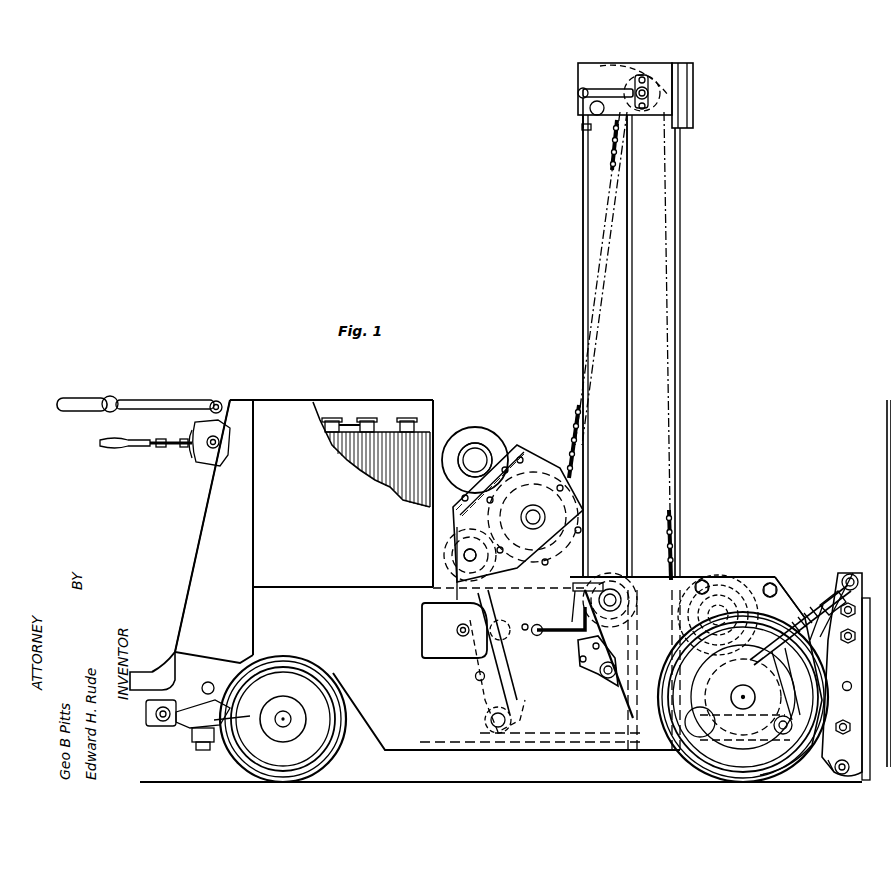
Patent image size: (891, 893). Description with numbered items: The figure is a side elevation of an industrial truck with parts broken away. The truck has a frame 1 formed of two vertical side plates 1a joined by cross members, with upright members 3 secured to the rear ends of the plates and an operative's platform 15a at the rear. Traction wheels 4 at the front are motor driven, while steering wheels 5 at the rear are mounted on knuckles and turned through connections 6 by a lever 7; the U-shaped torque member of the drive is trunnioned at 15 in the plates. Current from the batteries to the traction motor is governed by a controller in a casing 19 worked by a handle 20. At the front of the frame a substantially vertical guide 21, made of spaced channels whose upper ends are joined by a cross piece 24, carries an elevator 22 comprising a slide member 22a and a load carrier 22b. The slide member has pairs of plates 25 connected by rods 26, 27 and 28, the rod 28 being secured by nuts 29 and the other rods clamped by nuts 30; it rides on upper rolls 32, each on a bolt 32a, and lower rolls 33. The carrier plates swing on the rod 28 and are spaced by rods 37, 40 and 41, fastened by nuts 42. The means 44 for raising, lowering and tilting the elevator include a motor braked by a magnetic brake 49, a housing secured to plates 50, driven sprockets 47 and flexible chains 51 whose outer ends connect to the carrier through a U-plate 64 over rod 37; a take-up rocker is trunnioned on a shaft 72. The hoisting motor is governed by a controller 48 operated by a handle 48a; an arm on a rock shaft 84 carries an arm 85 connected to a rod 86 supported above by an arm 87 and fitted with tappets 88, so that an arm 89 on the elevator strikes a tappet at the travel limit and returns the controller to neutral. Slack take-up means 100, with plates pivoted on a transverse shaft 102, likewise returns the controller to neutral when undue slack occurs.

The frame 1 is at (393, 693).
The side plates 1a is at (344, 598).
The upright members 3 is at (196, 537).
The traction wheels 4 is at (686, 768).
The steering wheels 5 is at (334, 750).
The connections 6 is at (216, 748).
The lever 7 is at (84, 398).
The trunnions 15 is at (604, 680).
The operative's platform 15a is at (190, 693).
The controller casing 19 is at (192, 466).
The handle 20 is at (136, 452).
The guide 21 is at (631, 346).
The elevator 22 is at (776, 556).
The slide member 22a is at (654, 670).
The load carrier 22b is at (841, 674).
The cross piece 24 is at (694, 91).
The plates 25 is at (376, 478).
The rod 26 is at (701, 580).
The rod 27 is at (771, 582).
The rod 28 is at (838, 773).
The nuts 29 is at (850, 776).
The nuts 30 is at (782, 582).
The upper rolls 32 is at (642, 346).
The bolt 32a is at (621, 601).
The lower rolls 33 is at (796, 784).
The rod 37 is at (852, 574).
The rod 40 is at (850, 727).
The rod 41 is at (852, 686).
The nuts 42 is at (856, 605).
The raising and tilting means 44 is at (504, 426).
The sprockets 47 is at (465, 513).
The controller 48 is at (422, 615).
The operating handle 48a is at (178, 392).
The magnetic brake 49 is at (470, 430).
The plates 50 is at (458, 582).
The sprocket chains 51 is at (576, 444).
The U-plate 64 is at (808, 615).
The shaft 72 is at (476, 676).
The rock shaft 84 is at (536, 638).
The arm 85 is at (560, 640).
The rod 86 is at (581, 140).
The arm 87 is at (581, 89).
The tappets 88 is at (582, 127).
The arm 89 is at (573, 584).
The slack take-up means 100 is at (626, 77).
The transverse shaft 102 is at (597, 116).